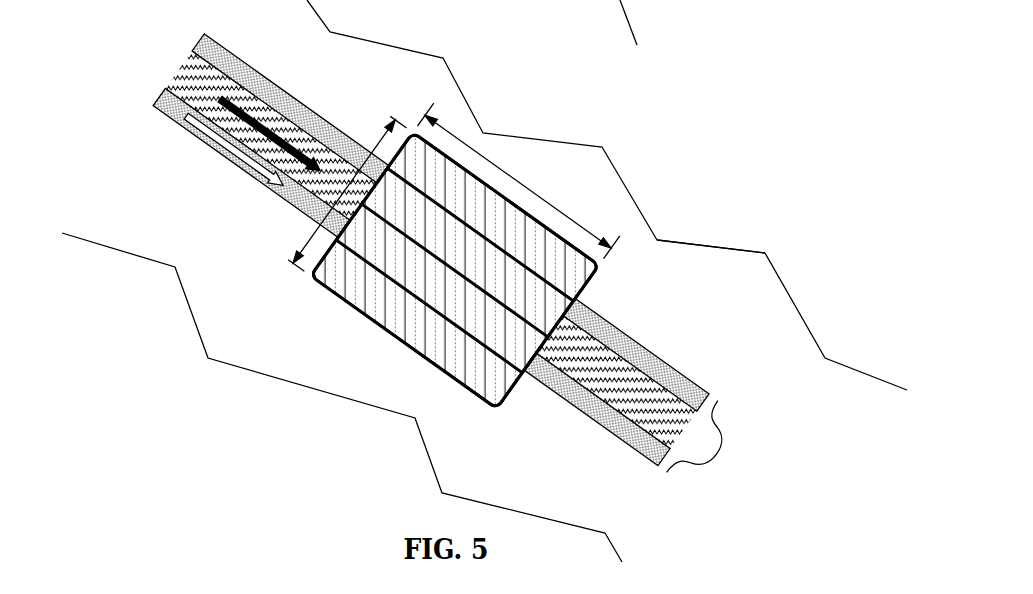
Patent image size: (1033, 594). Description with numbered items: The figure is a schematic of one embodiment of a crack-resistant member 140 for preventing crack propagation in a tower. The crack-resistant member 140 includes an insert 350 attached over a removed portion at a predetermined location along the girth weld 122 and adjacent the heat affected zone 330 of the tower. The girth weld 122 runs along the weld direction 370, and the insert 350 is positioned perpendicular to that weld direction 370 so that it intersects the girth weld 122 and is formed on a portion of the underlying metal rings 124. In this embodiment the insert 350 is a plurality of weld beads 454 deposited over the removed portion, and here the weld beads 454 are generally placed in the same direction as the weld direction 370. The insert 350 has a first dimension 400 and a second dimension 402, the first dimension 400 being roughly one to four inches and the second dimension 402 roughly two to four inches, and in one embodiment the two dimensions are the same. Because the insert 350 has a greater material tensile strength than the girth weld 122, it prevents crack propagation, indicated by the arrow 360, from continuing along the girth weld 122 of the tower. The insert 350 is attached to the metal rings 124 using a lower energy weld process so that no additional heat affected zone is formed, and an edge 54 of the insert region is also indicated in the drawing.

The edge of screen 54 is at (293, 262).
The girth weld 122 is at (717, 458).
The metal ring 124 is at (530, 478).
The crack-resistant member 140 is at (696, 124).
The heat affected zone 330 is at (619, 452).
The insert 350 is at (489, 271).
The crack propagation 360 is at (189, 134).
The weld direction 370 is at (253, 97).
The first dimension 400 is at (373, 140).
The second dimension 402 is at (508, 175).
The weld bead 454 is at (455, 271).